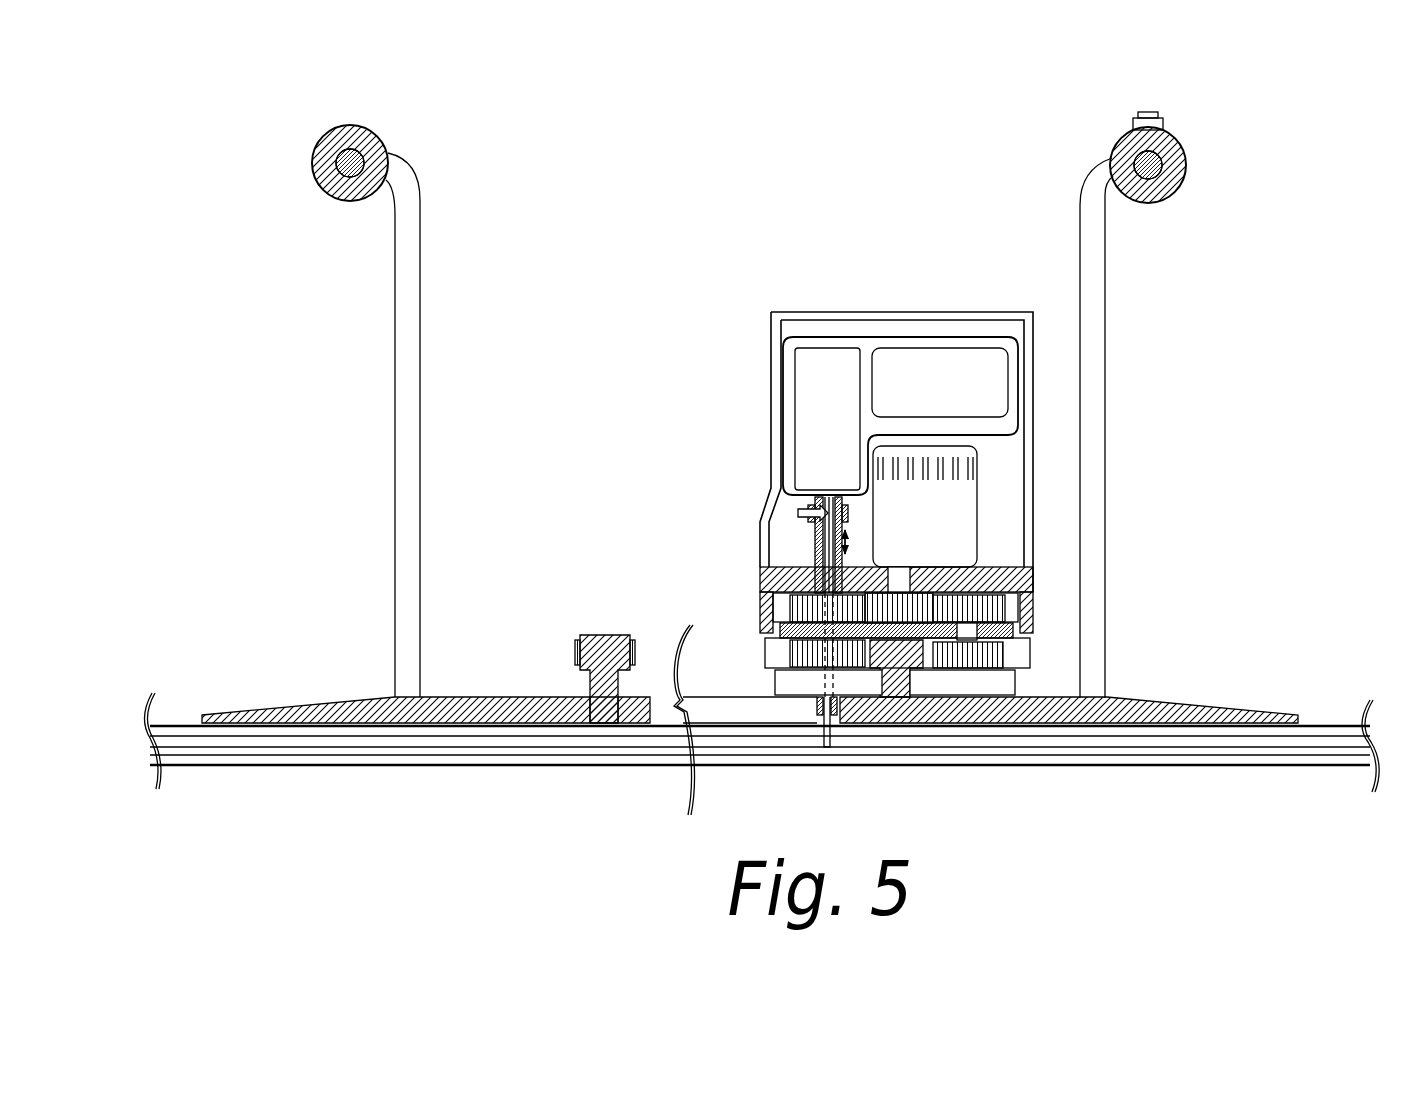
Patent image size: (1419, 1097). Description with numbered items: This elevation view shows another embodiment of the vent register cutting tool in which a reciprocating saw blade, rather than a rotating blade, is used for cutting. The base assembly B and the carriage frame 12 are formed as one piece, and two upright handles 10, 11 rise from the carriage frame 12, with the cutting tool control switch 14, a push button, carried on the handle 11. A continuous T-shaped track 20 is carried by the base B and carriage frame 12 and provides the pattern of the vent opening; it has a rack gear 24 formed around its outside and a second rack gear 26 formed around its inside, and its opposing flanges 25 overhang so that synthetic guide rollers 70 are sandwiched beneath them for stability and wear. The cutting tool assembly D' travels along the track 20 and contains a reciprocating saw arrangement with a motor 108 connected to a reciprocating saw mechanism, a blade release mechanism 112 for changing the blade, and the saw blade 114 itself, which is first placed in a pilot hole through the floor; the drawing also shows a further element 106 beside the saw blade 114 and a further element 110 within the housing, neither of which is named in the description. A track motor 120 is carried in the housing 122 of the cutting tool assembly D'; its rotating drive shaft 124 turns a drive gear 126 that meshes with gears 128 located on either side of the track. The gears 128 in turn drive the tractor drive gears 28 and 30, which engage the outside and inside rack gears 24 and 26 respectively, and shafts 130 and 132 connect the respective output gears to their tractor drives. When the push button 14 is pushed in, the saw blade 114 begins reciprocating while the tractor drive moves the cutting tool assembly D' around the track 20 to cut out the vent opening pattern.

The handle 10 is at (395, 352).
The handle 11 is at (1107, 312).
The carriage frame 12 is at (1233, 710).
The cutting tool control switch 14 is at (1167, 117).
The track 20 is at (592, 635).
The rack gear 24 is at (578, 652).
The flanges 25 is at (590, 672).
The second rack gear 26 is at (632, 652).
The tractor drive gear 28 is at (1005, 652).
The tractor drive gear 30 is at (790, 650).
The guide rollers 70 is at (1017, 678).
The shaft 106 is at (833, 768).
The motor 108 is at (918, 348).
The control unit 110 is at (820, 348).
The blade release mechanism 112 is at (785, 513).
The saw blade 114 is at (758, 550).
The track motor 120 is at (977, 548).
The housing 122 is at (771, 330).
The drive shaft 124 is at (901, 600).
The drive gear 126 is at (900, 610).
The gears 128 is at (790, 604).
The shaft 130 is at (970, 633).
The shaft 132 is at (823, 633).
The base assembly B is at (1340, 722).
The cutting tool assembly D' is at (1103, 423).